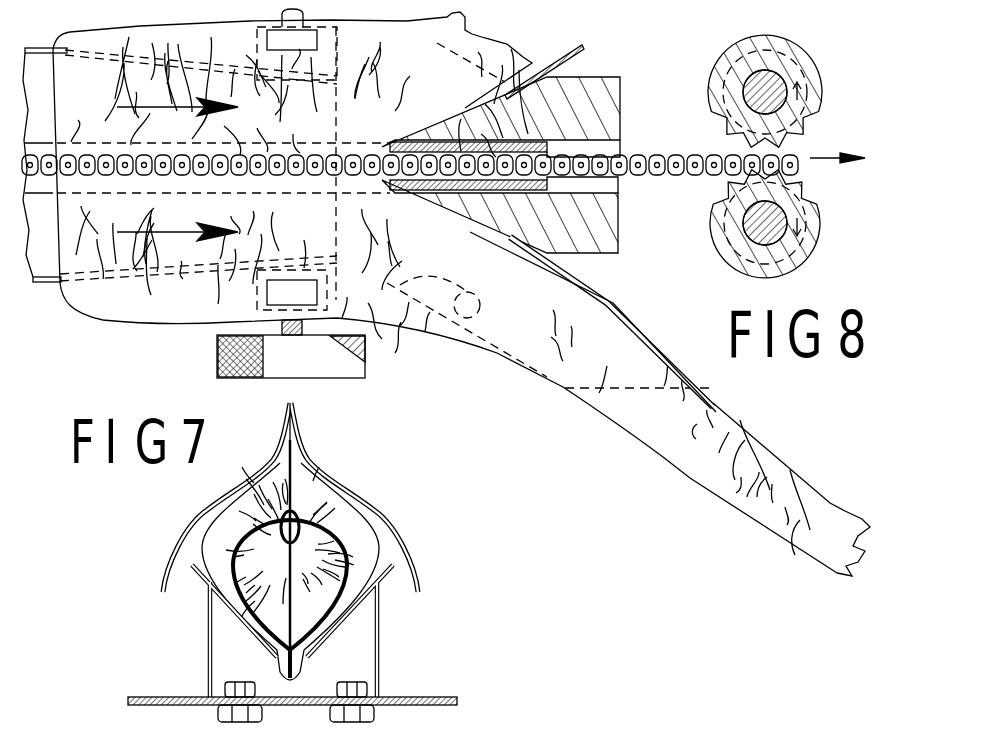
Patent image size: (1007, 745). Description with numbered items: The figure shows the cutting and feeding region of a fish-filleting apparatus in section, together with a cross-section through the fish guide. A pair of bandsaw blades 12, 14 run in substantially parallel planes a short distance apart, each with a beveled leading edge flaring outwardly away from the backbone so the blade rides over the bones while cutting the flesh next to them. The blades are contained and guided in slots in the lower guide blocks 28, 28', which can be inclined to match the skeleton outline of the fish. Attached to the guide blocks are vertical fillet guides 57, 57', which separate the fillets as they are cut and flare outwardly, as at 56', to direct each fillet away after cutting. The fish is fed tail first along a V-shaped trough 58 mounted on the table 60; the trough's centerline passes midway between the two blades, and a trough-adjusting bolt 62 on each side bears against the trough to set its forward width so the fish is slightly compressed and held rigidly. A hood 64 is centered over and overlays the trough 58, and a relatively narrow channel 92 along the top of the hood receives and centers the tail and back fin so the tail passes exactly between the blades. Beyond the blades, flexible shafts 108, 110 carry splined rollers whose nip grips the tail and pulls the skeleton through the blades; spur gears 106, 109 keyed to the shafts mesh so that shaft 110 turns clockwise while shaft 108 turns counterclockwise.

In FIG. 8, the bandsaw blade 12 is at (515, 193).
In FIG. 8, the bandsaw blade 14 is at (508, 140).
In FIG. 8, the lower guide block 28 is at (537, 117).
In FIG. 8, the lower guide block 28' is at (541, 215).
In FIG. 8, the outward flare of fillet guide 56' is at (611, 365).
In FIG. 8, the fillet guide 57 is at (601, 57).
In FIG. 8, the fillet guide 57' is at (581, 330).
In FIG. 8, the V-shaped trough 58 is at (43, 250).
In FIG. 7, the V-shaped trough 58 is at (353, 605).
In FIG. 7, the table 60 is at (407, 700).
In FIG. 8, the trough-adjusting bolt 62 is at (307, 355).
In FIG. 7, the hood 64 is at (173, 553).
In FIG. 7, the channel 92 is at (282, 432).
In FIG. 8, the spur gear 106 is at (810, 227).
In FIG. 8, the shaft 108 is at (763, 100).
In FIG. 8, the spur gear 109 is at (773, 63).
In FIG. 8, the shaft 110 is at (767, 210).